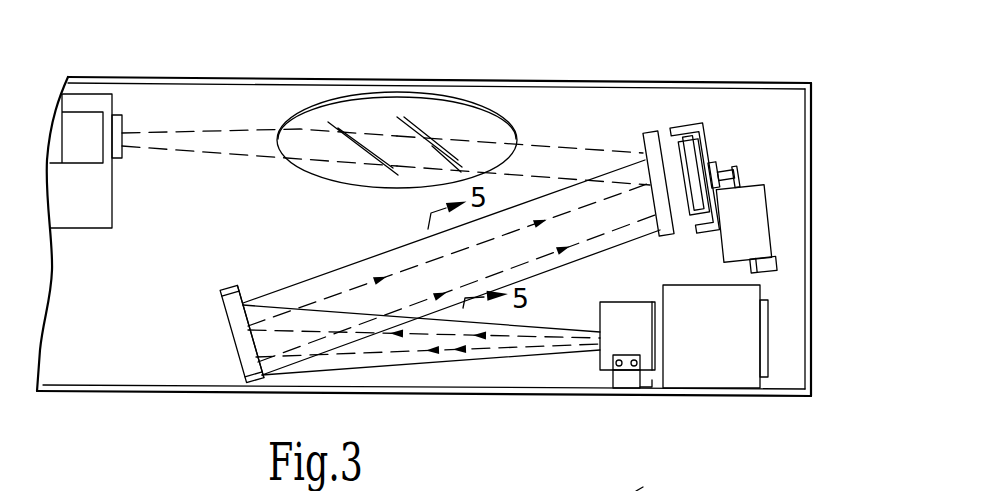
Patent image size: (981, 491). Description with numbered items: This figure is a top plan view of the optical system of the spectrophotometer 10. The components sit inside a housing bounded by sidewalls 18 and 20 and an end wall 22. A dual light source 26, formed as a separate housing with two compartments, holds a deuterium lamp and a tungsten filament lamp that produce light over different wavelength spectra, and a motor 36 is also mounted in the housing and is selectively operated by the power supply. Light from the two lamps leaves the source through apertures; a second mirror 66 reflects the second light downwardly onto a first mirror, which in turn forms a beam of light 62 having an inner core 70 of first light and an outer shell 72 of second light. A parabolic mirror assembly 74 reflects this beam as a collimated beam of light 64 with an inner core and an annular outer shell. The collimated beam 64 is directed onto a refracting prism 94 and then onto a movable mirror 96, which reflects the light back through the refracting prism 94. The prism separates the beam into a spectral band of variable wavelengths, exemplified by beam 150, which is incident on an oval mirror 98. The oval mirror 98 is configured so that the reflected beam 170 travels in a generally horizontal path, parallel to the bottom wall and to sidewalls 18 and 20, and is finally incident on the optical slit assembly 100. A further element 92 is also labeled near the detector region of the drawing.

The spectrophotometer 10 is at (670, 418).
The sidewall 18 is at (497, 392).
The sidewall 20 is at (465, 82).
The end wall 22 is at (811, 147).
The dual light source 26 is at (727, 349).
The motor 36 is at (763, 210).
The beam of light 62 is at (313, 365).
The collimated beam of light 64 is at (350, 265).
The second mirror 66 is at (608, 350).
The inner core 70 is at (472, 347).
The outer shell 72 is at (422, 350).
The parabolic mirror assembly 74 is at (232, 345).
The circuit board 92 is at (654, 481).
The refracting prism 94 is at (643, 153).
The movable mirror 96 is at (695, 143).
The oval mirror 98 is at (357, 117).
The optical slit assembly 100 is at (123, 158).
The beam 150 is at (540, 158).
The beam 170 is at (198, 140).